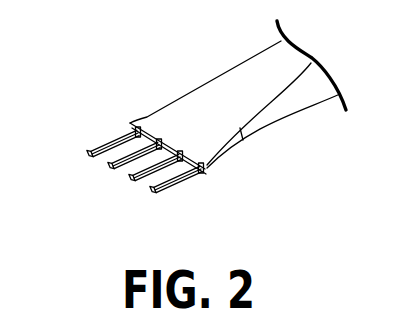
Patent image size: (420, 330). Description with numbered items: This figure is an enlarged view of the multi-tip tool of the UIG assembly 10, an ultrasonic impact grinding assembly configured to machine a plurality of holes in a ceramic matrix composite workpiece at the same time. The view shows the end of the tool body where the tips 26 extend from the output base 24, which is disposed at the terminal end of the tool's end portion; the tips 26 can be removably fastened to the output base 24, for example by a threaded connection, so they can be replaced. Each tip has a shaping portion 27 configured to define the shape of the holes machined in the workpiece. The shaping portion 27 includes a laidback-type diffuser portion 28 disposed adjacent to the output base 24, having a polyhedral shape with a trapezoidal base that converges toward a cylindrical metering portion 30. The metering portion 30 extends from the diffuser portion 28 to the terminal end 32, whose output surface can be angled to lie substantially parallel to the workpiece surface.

The UIG assembly 10 is at (288, 103).
The output base 24 is at (182, 156).
The tips 26 is at (99, 177).
The shaping portion 27 is at (114, 150).
The diffuser portion 28 is at (88, 115).
The metering portion 30 is at (91, 150).
The terminal end 32 is at (165, 195).